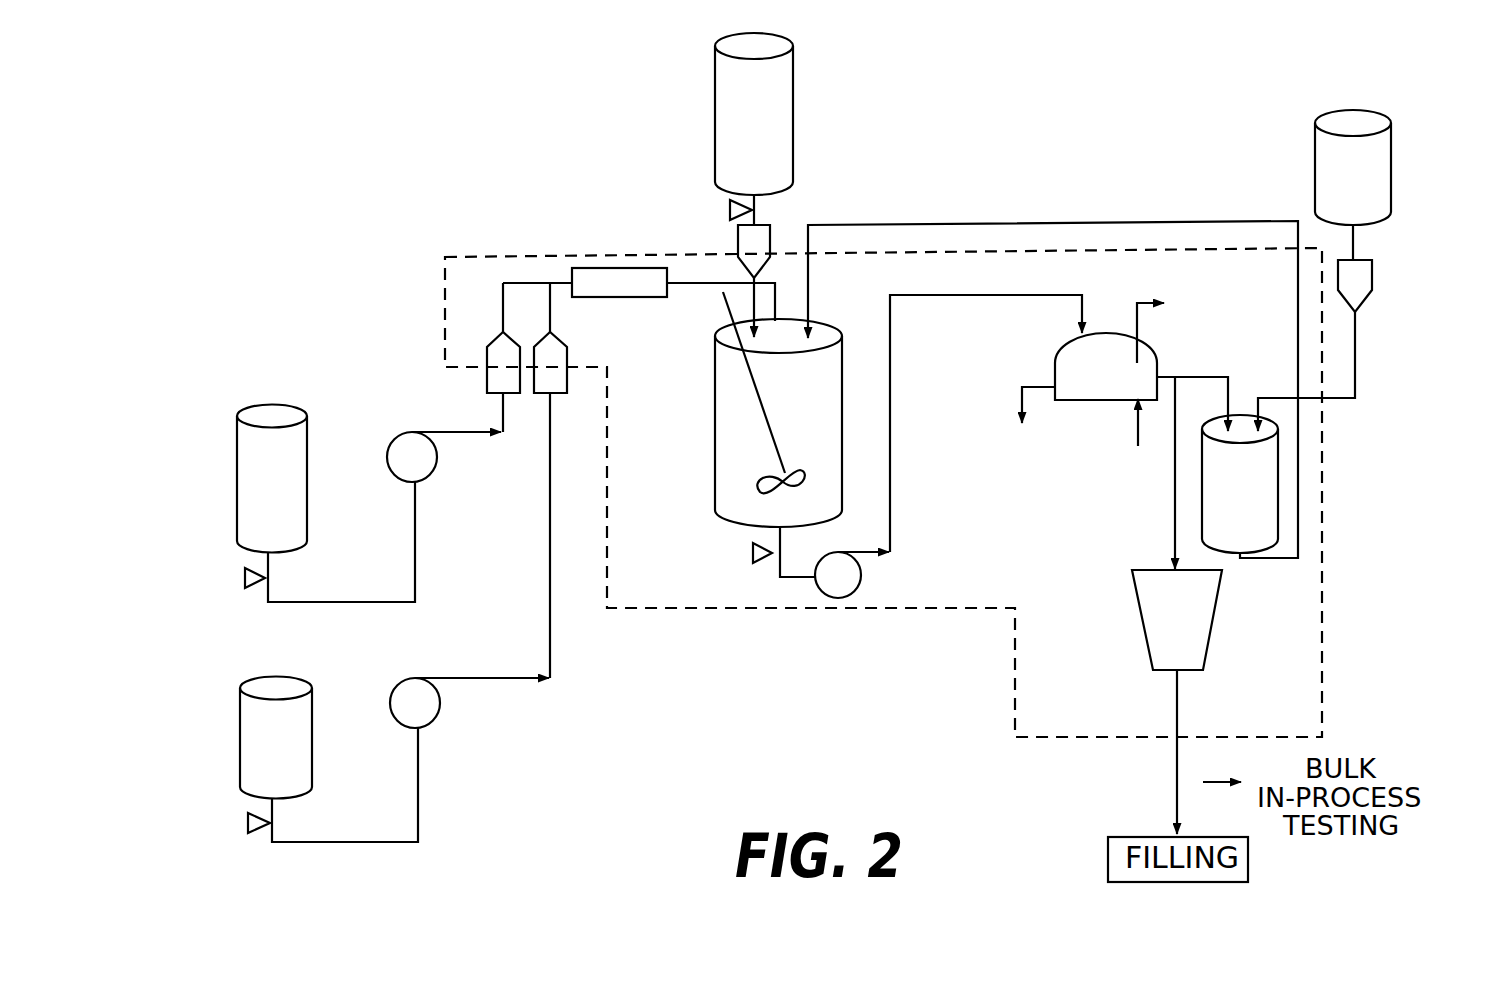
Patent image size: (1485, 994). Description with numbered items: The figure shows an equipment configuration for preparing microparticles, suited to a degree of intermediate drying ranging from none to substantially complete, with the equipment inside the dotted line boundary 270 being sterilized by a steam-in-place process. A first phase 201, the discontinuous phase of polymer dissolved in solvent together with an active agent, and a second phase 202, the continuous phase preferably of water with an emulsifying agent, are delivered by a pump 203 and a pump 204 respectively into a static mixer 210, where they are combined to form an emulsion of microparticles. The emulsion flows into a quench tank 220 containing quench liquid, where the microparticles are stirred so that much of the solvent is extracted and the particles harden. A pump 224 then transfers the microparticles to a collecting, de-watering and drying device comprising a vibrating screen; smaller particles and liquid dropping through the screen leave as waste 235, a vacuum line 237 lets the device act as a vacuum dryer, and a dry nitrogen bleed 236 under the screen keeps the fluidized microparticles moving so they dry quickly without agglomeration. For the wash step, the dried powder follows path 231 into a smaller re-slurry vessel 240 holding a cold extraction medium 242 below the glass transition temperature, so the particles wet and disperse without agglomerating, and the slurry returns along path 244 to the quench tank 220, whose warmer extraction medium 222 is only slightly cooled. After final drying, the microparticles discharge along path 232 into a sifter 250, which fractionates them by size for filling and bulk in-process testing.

The first phase 201 is at (237, 457).
The second phase 202 is at (240, 740).
The pump 203 is at (434, 475).
The pump 204 is at (437, 717).
The static mixer 210 is at (628, 297).
The quench tank 220 is at (715, 417).
The extraction medium 222 is at (793, 110).
The pump 224 is at (862, 583).
The path 231 is at (1195, 378).
The path 232 is at (1175, 515).
The waste 235 is at (1028, 387).
The dry nitrogen bleed 236 is at (1137, 413).
The vacuum line 237 is at (1137, 322).
The vessel 240 is at (1240, 553).
The extraction medium 242 is at (1393, 180).
The path 244 is at (1058, 223).
The sifter 250 is at (1212, 640).
The dotted line boundary 270 is at (862, 609).